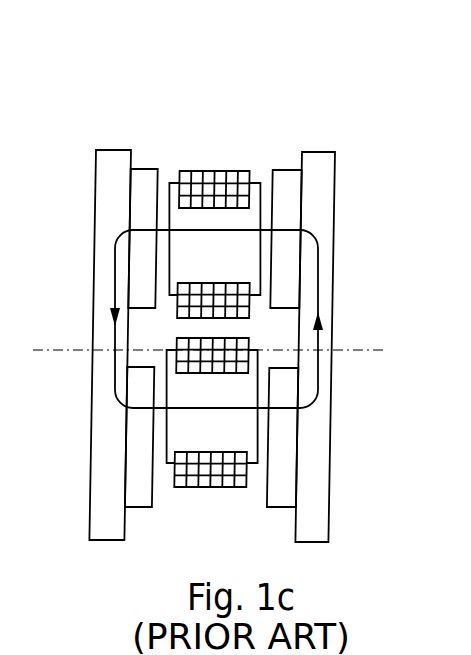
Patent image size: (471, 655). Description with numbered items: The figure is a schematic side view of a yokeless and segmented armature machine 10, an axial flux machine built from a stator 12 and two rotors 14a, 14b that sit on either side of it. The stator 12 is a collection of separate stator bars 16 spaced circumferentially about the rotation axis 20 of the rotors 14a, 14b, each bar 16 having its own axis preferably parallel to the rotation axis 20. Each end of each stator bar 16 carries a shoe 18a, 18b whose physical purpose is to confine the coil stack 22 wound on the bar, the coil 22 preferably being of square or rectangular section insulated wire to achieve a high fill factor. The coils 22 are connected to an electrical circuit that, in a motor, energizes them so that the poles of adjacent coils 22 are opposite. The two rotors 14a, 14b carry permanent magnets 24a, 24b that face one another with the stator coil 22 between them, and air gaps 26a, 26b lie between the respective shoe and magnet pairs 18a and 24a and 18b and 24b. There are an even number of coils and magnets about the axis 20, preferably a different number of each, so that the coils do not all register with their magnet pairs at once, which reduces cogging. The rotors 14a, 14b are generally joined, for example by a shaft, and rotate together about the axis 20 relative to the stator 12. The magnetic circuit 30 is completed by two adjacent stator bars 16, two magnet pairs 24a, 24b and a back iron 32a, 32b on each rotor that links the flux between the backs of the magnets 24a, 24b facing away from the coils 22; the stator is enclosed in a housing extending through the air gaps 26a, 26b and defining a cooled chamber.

The yokeless and segmented armature machine 10 is at (259, 56).
The stator 12 is at (225, 329).
The rotor 14a is at (76, 382).
The rotor 14b is at (337, 367).
The stator bar 16 is at (225, 276).
The shoe 18a is at (172, 200).
The shoe 18b is at (259, 182).
The rotation axis 20 is at (57, 348).
The coil stack 22 is at (187, 172).
The permanent magnet 24a is at (142, 277).
The permanent magnet 24b is at (308, 324).
The air gap 26a is at (167, 192).
The air gap 26b is at (266, 193).
The magnetic circuit 30 is at (318, 372).
The back iron 32a is at (102, 498).
The back iron 32b is at (313, 493).